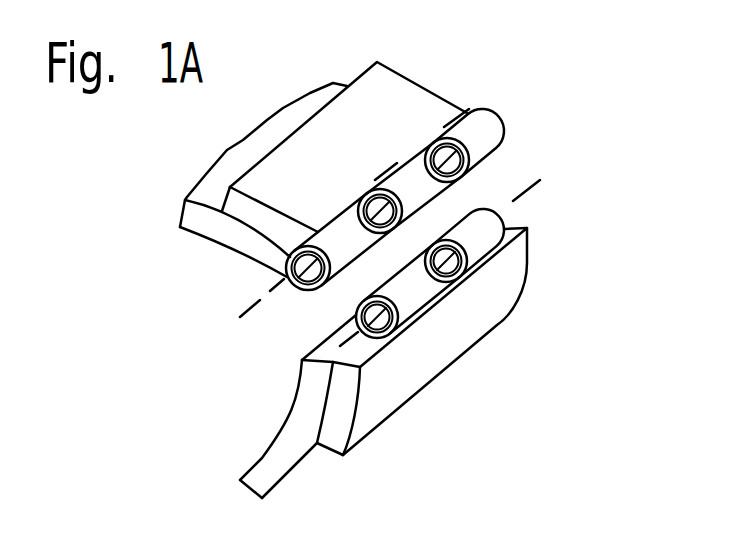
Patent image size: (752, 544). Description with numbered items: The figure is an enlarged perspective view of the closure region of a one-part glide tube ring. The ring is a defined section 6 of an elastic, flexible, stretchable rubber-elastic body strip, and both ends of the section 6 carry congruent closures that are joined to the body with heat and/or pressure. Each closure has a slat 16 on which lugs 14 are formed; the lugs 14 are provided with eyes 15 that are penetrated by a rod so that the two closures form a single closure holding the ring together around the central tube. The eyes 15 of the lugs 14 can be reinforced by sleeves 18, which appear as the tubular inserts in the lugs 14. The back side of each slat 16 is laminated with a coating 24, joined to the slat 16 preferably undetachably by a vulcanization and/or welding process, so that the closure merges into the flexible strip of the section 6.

The section 6 is at (223, 237).
The lugs 14 is at (490, 137).
The eyes 15 is at (425, 204).
The slat 16 is at (400, 92).
The sleeves 18 is at (471, 162).
The coating 24 is at (252, 263).